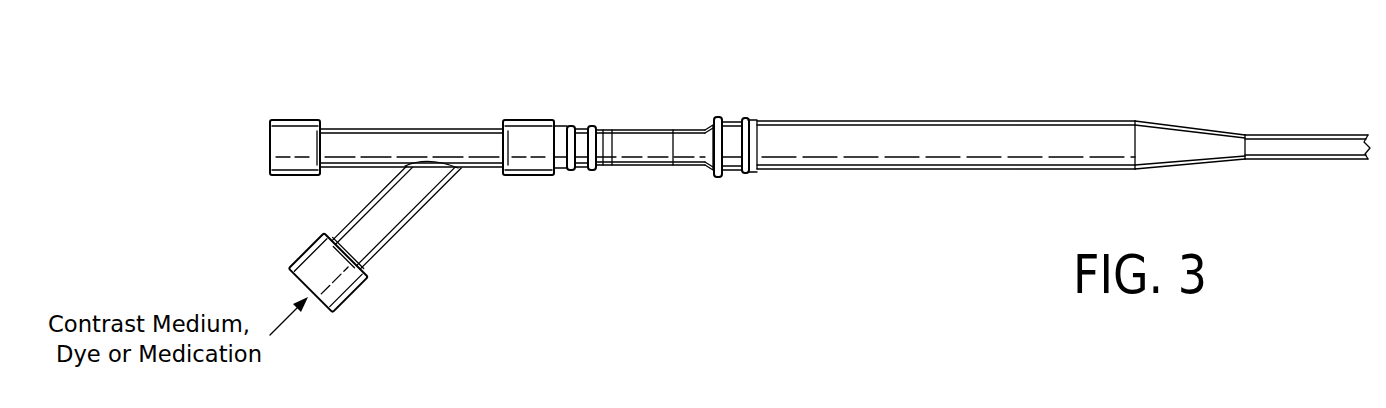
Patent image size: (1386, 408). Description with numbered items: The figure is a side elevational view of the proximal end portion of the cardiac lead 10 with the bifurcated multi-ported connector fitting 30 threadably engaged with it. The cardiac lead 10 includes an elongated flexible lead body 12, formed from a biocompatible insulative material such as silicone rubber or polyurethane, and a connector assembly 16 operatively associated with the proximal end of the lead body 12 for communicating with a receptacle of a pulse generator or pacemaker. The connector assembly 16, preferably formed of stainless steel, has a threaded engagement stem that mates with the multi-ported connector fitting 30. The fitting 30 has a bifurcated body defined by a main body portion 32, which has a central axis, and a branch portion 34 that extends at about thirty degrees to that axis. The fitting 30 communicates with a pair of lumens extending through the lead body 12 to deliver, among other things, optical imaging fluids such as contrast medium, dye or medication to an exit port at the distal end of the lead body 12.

The cardiac lead 10 is at (1080, 91).
The lead body 12 is at (953, 153).
The connector assembly 16 is at (652, 110).
The multi-ported connector fitting 30 is at (436, 105).
The main body portion 32 is at (348, 128).
The branch portion 34 is at (395, 216).